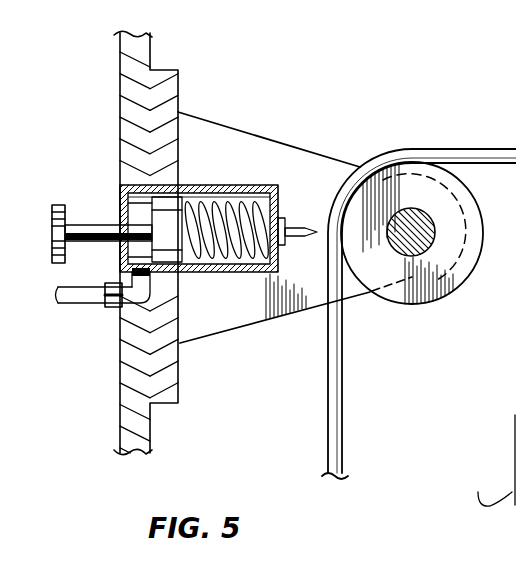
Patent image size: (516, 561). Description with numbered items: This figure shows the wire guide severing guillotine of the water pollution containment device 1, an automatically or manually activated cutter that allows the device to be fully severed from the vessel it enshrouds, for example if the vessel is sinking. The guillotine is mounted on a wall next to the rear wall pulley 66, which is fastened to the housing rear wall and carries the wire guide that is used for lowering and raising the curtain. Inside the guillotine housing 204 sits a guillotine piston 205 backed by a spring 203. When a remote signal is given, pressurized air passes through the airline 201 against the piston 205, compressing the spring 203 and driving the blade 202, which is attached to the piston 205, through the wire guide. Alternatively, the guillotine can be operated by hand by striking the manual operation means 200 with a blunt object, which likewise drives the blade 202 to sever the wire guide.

The manual operation means 200 is at (59, 205).
The airline 201 is at (78, 304).
The blade 202 is at (303, 227).
The spring 203 is at (222, 206).
The cylinder housing 204 is at (204, 185).
The guillotine piston 205 is at (186, 273).
The rear wall pulley 66 is at (410, 305).
The water pollution containment device 1 is at (496, 460).